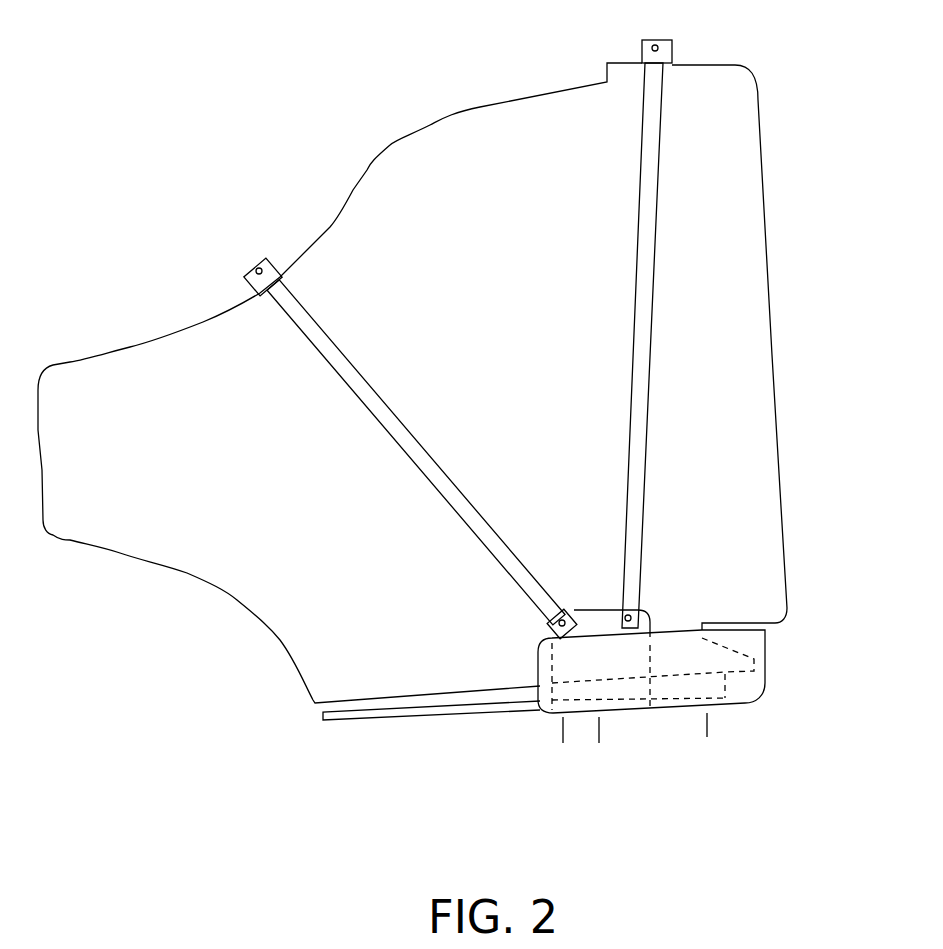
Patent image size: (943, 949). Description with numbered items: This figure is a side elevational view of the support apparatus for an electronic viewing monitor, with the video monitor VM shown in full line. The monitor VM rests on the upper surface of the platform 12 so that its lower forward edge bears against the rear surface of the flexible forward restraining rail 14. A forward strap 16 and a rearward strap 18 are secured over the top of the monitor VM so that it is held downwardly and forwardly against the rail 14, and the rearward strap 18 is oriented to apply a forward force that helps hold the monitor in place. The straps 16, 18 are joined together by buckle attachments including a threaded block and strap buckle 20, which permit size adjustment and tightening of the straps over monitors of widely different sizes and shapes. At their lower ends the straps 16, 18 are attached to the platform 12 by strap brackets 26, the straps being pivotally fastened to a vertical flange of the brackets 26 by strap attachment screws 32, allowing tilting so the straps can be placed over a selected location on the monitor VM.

The platform 12 is at (424, 717).
The forward restraining rail 14 is at (752, 684).
The forward strap 16 is at (650, 357).
The rearward strap 18 is at (357, 398).
The threaded block and strap buckle 20 is at (641, 45).
The strap brackets 26 is at (648, 613).
The strap attachment screws 32 is at (610, 612).
The electronic viewing monitor VM is at (104, 513).